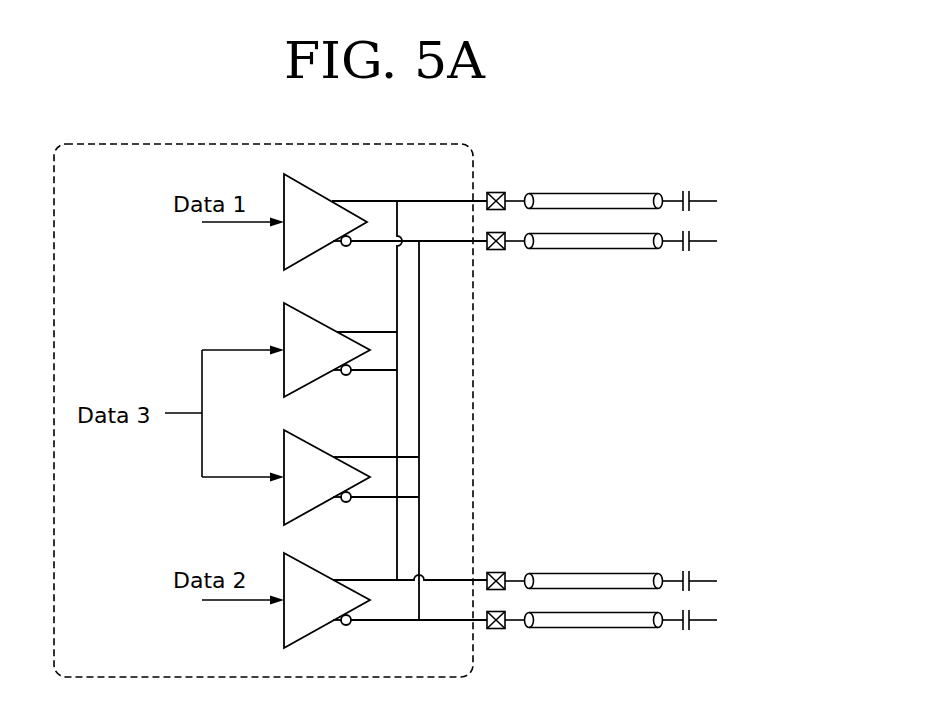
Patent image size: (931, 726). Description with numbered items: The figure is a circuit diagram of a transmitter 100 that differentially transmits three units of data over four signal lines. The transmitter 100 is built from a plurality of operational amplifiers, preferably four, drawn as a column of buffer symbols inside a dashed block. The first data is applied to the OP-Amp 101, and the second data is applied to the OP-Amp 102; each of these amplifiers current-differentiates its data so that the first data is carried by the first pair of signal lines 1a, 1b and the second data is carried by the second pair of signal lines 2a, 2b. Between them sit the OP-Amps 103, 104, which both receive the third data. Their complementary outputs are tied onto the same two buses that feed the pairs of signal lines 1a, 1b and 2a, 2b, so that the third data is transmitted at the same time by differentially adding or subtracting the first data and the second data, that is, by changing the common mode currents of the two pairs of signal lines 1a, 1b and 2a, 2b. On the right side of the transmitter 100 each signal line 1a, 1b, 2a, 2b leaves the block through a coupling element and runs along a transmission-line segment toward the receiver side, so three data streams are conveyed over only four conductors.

The transmitter 100 is at (473, 410).
The OP-Amp 101 is at (282, 247).
The OP-Amp 102 is at (282, 625).
The OP-Amp 103 is at (282, 323).
The OP-Amp 104 is at (282, 497).
The signal line 1a is at (606, 194).
The signal line 1b is at (610, 250).
The signal line 2a is at (612, 573).
The signal line 2b is at (612, 628).